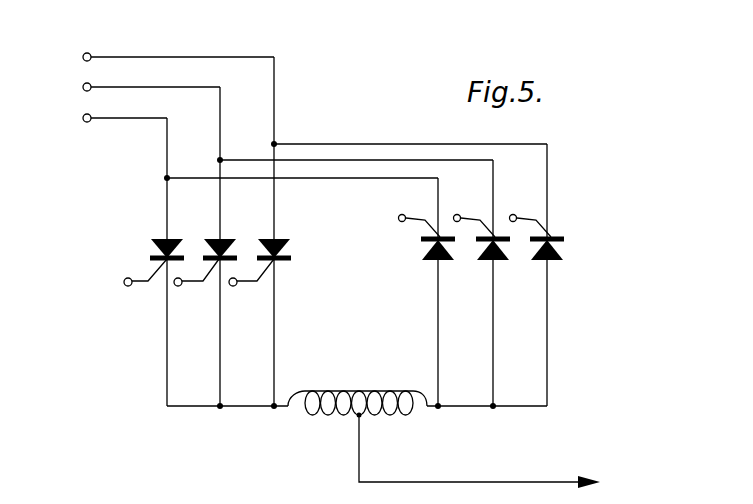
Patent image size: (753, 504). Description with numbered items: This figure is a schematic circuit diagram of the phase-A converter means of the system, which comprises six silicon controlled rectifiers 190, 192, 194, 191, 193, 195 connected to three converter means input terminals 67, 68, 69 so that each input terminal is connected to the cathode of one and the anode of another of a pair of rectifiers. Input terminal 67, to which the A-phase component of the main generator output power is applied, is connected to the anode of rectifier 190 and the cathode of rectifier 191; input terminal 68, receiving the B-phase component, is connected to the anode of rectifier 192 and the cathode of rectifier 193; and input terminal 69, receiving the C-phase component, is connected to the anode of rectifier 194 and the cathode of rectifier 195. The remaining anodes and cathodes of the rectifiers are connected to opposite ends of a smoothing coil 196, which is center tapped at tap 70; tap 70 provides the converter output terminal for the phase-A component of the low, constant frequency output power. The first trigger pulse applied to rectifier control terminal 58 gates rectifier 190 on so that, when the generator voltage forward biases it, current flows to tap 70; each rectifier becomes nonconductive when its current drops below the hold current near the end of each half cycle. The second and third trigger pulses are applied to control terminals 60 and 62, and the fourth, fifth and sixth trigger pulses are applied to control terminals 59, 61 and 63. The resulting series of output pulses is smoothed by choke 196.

The converter means input terminal 69 is at (83, 56).
The converter means input terminal 68 is at (83, 86).
The converter means input terminal 67 is at (83, 117).
The silicon controlled rectifier 190 is at (170, 241).
The silicon controlled rectifier 192 is at (221, 241).
The silicon controlled rectifier 194 is at (277, 241).
The silicon controlled rectifier 191 is at (447, 263).
The silicon controlled rectifier 193 is at (502, 263).
The silicon controlled rectifier 195 is at (557, 263).
The rectifier control terminal 58 is at (126, 278).
The converter means control terminal 60 is at (180, 278).
The converter means control terminal 62 is at (235, 278).
The converter means control terminal 59 is at (404, 221).
The converter means control terminal 61 is at (458, 221).
The converter means control terminal 63 is at (514, 221).
The smoothing coil 196 is at (357, 389).
The center tap 70 is at (361, 417).